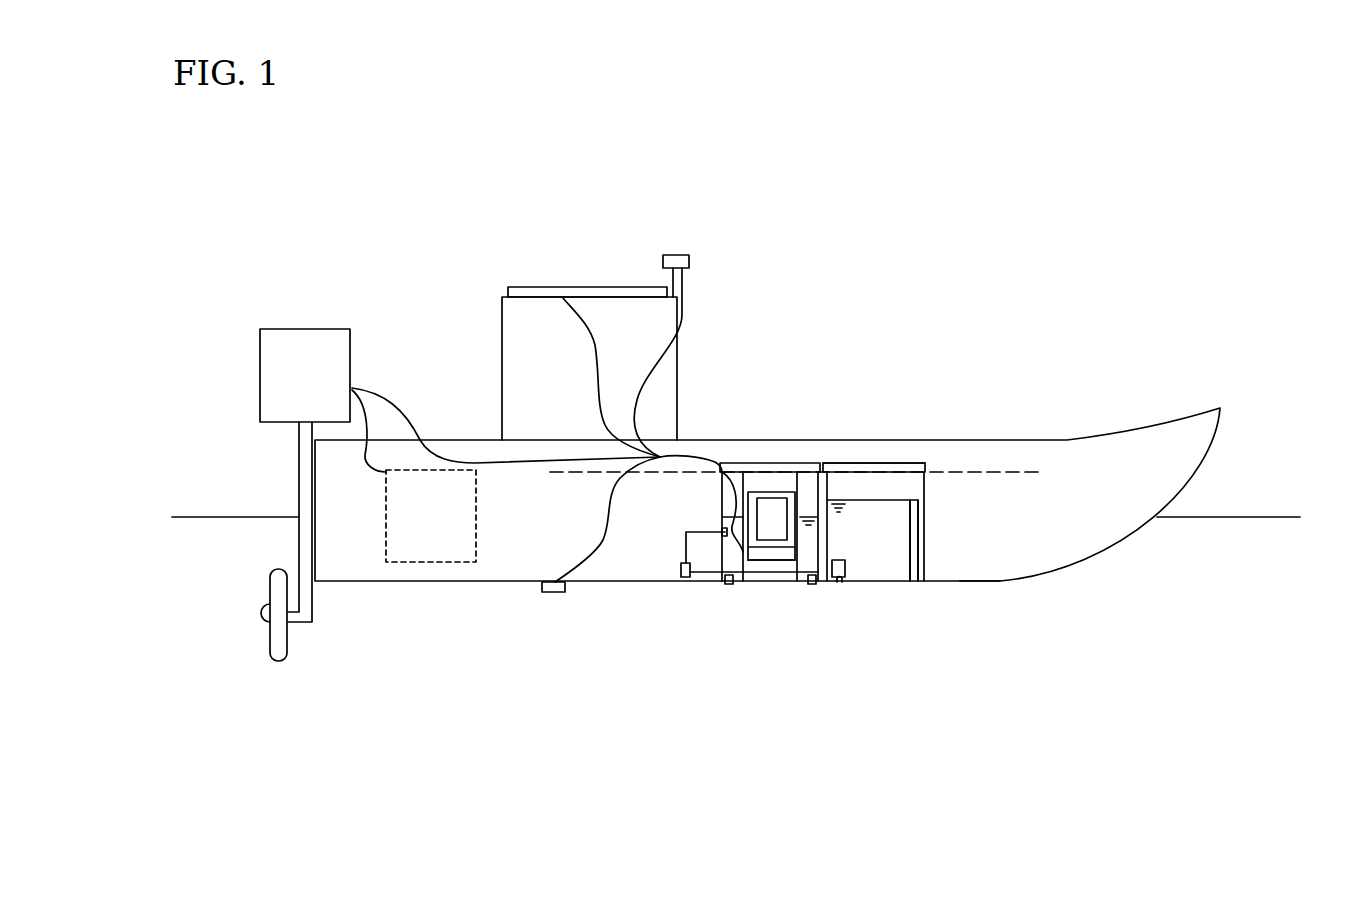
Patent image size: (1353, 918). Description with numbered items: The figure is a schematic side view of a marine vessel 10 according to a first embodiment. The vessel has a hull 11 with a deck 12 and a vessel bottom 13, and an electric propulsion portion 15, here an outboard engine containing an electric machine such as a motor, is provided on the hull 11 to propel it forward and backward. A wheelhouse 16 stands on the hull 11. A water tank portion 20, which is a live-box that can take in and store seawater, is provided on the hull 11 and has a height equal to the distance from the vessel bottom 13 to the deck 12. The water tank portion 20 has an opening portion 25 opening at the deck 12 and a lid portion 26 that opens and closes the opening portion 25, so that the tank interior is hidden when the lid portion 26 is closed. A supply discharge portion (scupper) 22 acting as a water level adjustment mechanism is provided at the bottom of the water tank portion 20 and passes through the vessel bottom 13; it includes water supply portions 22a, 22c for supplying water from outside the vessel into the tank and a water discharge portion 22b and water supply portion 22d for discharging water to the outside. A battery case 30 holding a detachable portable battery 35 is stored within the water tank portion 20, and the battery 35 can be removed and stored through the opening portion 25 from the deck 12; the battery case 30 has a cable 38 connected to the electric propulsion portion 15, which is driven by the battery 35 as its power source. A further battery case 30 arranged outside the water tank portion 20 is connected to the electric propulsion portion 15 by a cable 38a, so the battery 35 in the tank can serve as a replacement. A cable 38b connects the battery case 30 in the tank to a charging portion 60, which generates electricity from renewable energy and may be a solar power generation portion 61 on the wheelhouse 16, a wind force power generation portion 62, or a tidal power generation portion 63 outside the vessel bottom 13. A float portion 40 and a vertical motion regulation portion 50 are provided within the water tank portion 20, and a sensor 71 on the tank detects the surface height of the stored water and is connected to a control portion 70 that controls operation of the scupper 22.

The marine vessel 10 is at (322, 165).
The hull 11 is at (1138, 432).
The deck 12 is at (995, 470).
The vessel bottom 13 is at (982, 582).
The electric propulsion portion 15 is at (260, 333).
The wheelhouse 16 is at (502, 300).
The water tank portion 20 is at (660, 499).
The supply discharge portion (scupper) 22 is at (824, 617).
The water supply portion 22a is at (728, 586).
The water discharge portion 22b is at (812, 585).
The water supply portion 22c is at (840, 583).
The water supply portion 22d is at (913, 583).
The opening portion 25 is at (890, 447).
The lid portion 26 is at (857, 463).
The battery case 30 is at (660, 499).
The detachable portable battery 35 is at (453, 562).
The cable 38 is at (570, 418).
The cable 38a is at (368, 418).
The cable 38b is at (593, 333).
The float portion 40 is at (770, 563).
The vertical motion regulation portion 50 is at (718, 536).
The charging portion 60 is at (602, 235).
The solar power generation portion 61 is at (520, 287).
The wind force power generation portion 62 is at (682, 255).
The tidal power generation portion 63 is at (550, 592).
The control portion 70 is at (719, 604).
The sensor 71 is at (742, 553).